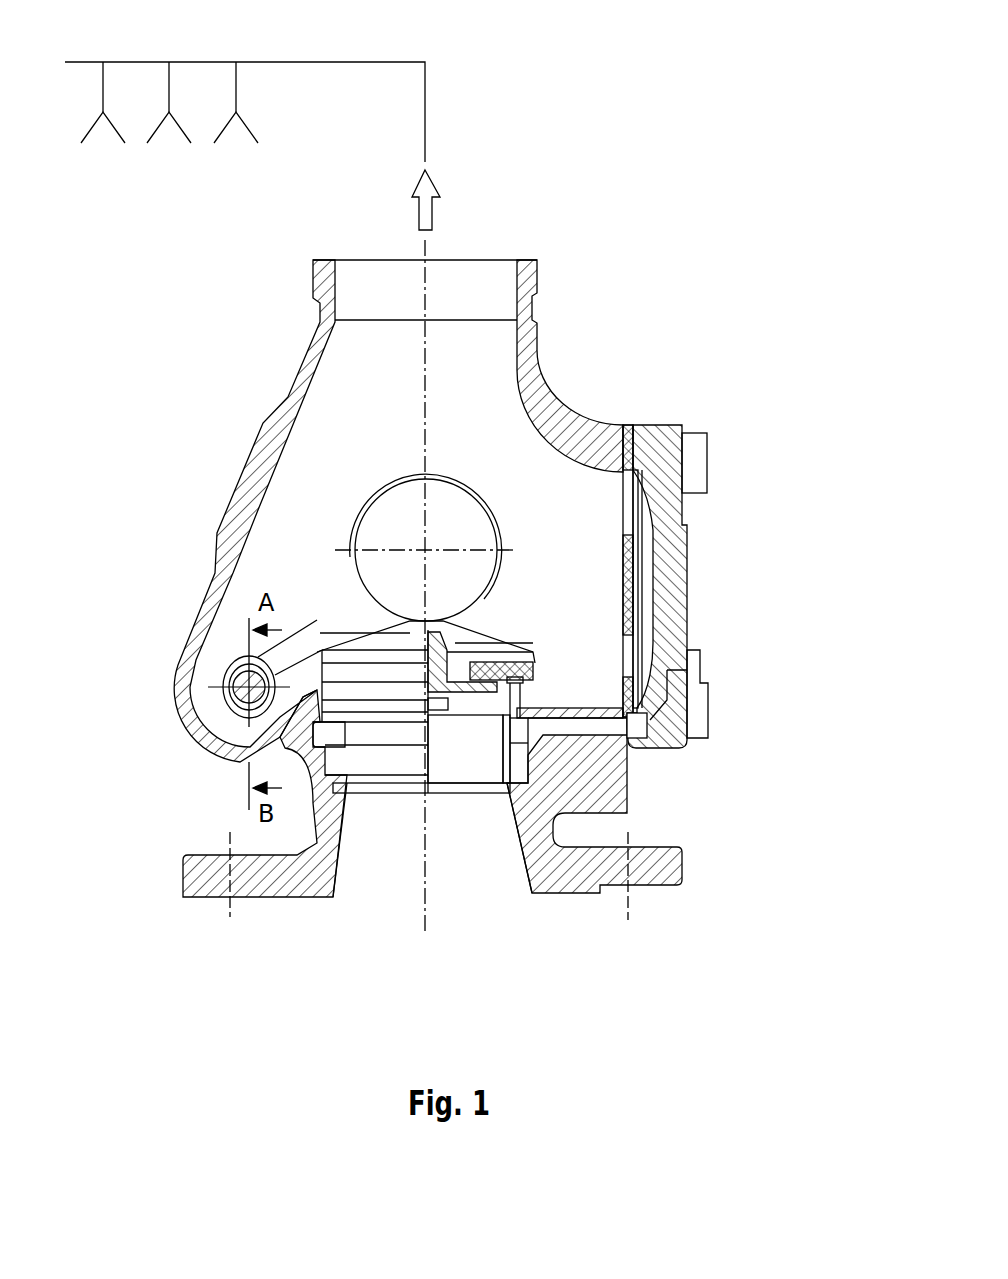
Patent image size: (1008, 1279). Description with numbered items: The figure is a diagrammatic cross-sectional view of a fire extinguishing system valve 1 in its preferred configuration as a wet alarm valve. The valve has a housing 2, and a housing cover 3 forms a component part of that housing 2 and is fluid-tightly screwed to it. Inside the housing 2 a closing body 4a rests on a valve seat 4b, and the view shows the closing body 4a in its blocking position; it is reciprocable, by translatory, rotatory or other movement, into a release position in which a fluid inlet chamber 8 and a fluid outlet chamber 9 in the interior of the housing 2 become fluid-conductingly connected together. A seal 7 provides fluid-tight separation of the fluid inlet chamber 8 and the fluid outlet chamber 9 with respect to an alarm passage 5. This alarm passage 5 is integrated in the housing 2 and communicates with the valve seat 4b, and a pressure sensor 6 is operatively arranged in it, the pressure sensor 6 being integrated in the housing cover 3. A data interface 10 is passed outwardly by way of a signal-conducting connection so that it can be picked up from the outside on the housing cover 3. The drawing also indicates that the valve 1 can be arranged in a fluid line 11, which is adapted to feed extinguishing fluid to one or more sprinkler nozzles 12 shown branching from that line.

The fire extinguishing system valve 1 is at (525, 232).
The housing 2 is at (525, 368).
The housing cover 3 is at (660, 440).
The closing body 4a is at (487, 630).
The valve seat 4b is at (486, 720).
The alarm passage 5 is at (262, 887).
The pressure sensor 6 is at (680, 748).
The seal 7 is at (638, 730).
The fluid inlet chamber 8 is at (370, 848).
The fluid outlet chamber 9 is at (322, 458).
The data interface 10 is at (688, 652).
The fluid line 11 is at (425, 84).
The sprinkler nozzles 12 is at (237, 140).